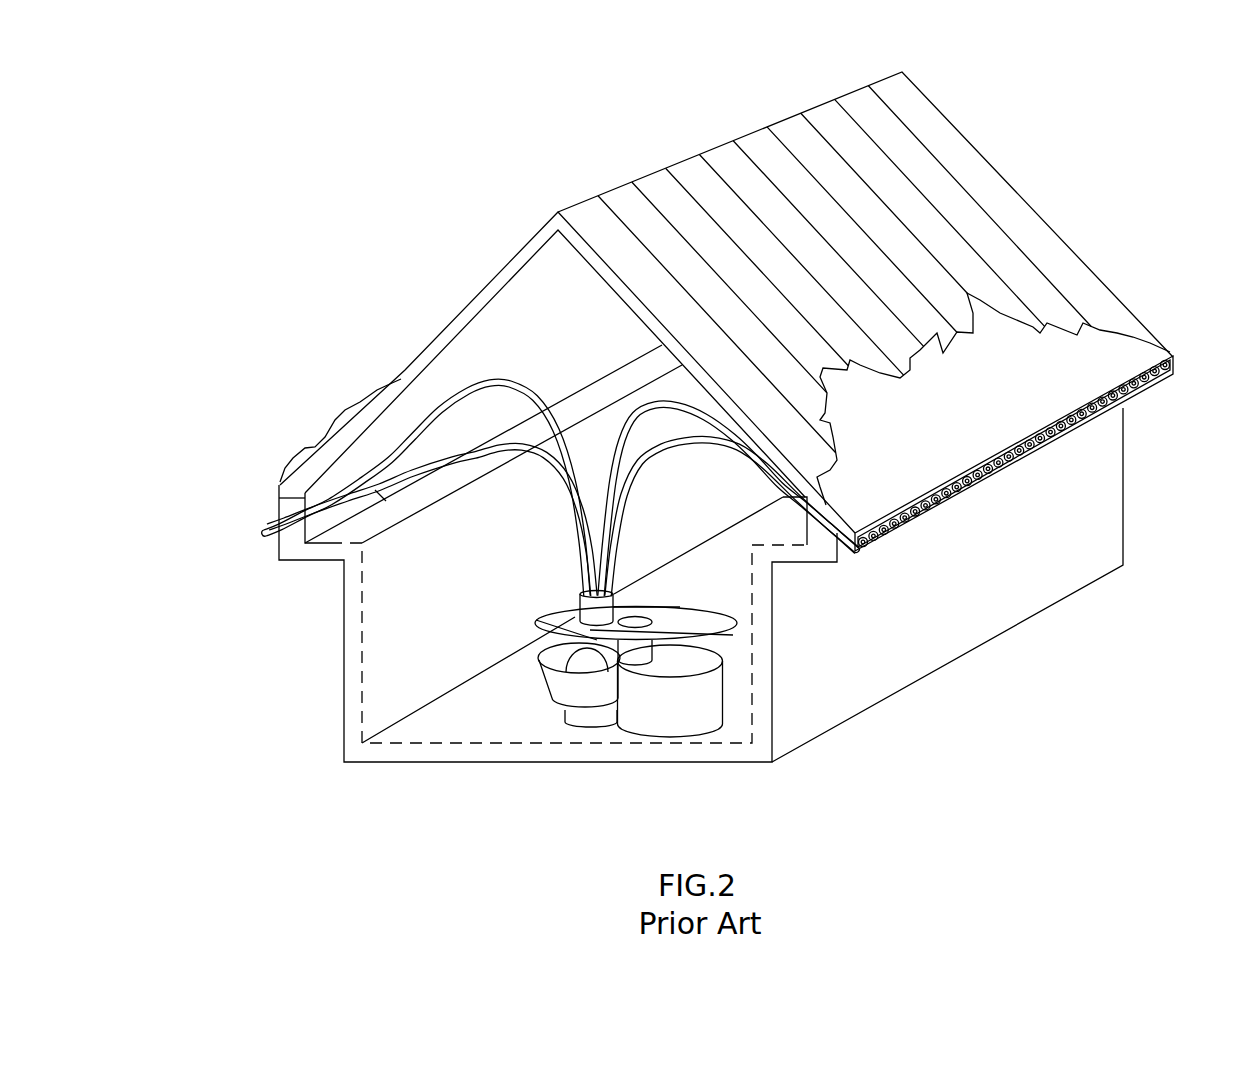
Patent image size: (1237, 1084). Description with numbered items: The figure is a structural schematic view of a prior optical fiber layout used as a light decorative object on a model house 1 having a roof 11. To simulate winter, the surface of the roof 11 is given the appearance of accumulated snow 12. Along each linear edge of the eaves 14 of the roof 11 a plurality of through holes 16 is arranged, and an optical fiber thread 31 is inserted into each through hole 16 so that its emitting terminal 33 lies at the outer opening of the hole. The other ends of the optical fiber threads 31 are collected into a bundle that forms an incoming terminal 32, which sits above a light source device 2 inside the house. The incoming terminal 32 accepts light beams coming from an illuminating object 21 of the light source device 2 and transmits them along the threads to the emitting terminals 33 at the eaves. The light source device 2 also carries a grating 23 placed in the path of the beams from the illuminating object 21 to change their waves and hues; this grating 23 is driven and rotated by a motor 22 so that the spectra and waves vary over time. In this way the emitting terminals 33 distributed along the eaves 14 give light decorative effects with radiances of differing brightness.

The house 1 is at (412, 262).
The roof 11 is at (963, 175).
The accumulated snow 12 is at (1090, 352).
The eaves 14 is at (275, 462).
The through hole 16 is at (868, 547).
The light source device 2 is at (535, 695).
The illuminating object 21 is at (603, 697).
The motor 22 is at (667, 703).
The grating 23 is at (690, 636).
The optical fiber thread 31 is at (548, 493).
The incoming terminal 32 is at (580, 606).
The emitting terminal 33 is at (895, 528).